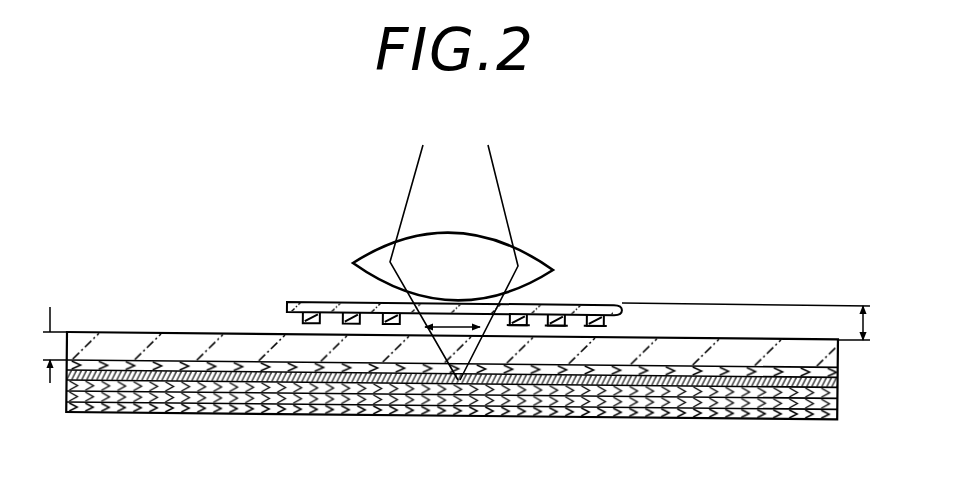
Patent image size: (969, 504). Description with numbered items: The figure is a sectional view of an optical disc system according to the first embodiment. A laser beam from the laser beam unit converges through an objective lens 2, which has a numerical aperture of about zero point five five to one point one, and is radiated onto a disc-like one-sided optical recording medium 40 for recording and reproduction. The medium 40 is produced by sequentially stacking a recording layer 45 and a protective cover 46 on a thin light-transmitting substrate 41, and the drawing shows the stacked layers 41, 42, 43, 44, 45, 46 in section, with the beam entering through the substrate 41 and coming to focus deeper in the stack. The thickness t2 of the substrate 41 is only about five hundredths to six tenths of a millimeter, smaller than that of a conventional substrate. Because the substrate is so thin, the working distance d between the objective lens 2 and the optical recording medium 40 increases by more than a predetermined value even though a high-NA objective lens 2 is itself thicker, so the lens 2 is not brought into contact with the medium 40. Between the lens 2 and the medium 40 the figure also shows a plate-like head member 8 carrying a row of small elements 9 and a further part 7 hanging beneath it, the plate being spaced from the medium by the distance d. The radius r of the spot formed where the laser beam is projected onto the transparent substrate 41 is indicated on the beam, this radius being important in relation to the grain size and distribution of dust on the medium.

The objective lens 2 is at (533, 267).
The electrode layer 7 is at (601, 326).
The slider / head substrate 8 is at (283, 303).
The electrodes 9 is at (563, 297).
The optical recording medium 40 is at (170, 316).
The light-transmitting substrate 41 is at (840, 354).
The dielectric layer 42 is at (840, 370).
The recording layer 43 is at (840, 382).
The dielectric layer 44 is at (840, 391).
The recording layer 45 is at (840, 401).
The protective cover 46 is at (841, 419).
The spot radius r is at (458, 380).
The substrate thickness t2 is at (48, 342).
The working distance d is at (867, 323).